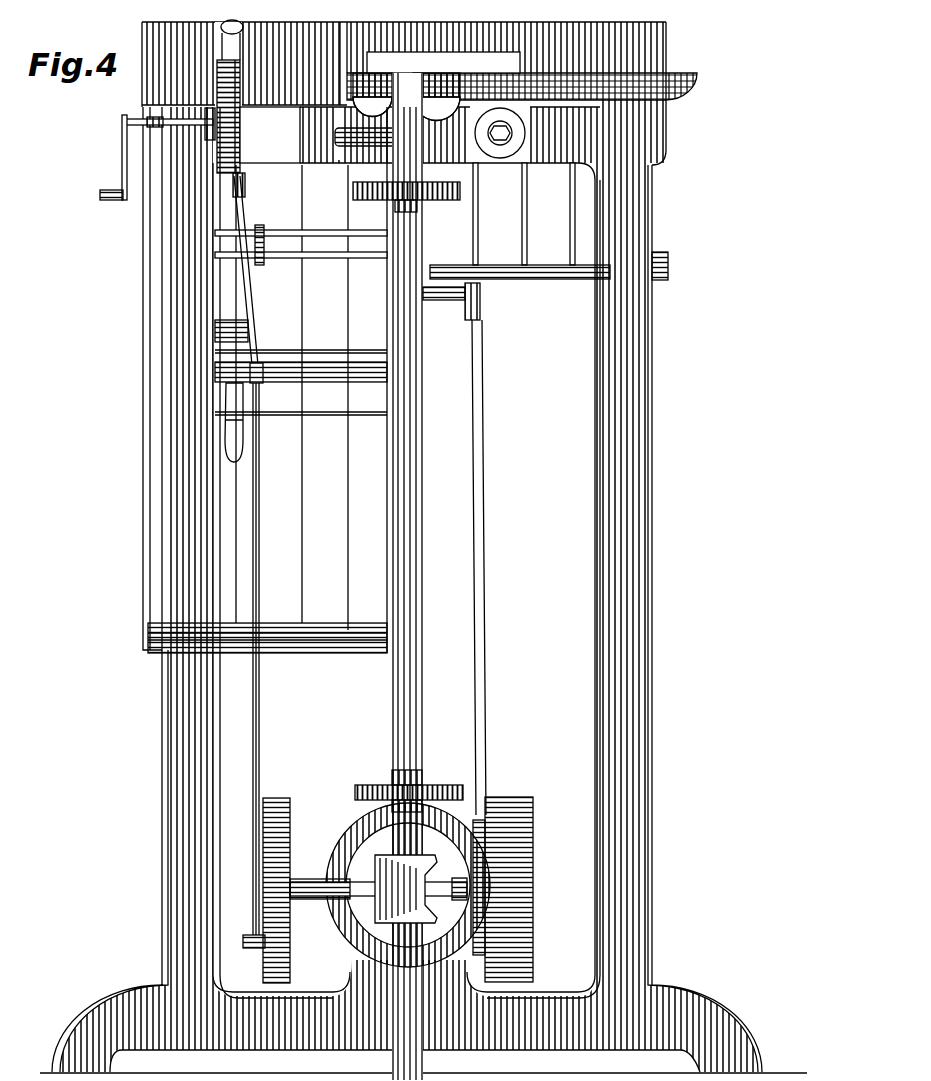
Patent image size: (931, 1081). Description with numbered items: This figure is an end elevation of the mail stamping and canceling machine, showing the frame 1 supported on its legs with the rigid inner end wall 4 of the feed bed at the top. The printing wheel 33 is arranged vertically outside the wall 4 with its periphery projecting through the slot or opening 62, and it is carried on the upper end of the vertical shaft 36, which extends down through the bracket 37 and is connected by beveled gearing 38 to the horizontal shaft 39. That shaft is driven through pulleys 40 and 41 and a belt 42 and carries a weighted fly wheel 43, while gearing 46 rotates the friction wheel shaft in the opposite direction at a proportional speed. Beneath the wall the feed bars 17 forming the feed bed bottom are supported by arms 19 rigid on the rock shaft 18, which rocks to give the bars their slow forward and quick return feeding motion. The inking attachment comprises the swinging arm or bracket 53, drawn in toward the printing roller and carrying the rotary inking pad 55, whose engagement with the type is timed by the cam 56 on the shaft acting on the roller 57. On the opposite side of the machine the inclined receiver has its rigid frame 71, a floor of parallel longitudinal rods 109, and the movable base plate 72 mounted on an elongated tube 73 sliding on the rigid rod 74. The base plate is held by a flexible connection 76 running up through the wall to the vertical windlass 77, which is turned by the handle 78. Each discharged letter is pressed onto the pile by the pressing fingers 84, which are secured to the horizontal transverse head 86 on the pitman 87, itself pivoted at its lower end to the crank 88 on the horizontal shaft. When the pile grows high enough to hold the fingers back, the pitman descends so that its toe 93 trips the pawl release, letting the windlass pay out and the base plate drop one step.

The frame 1 is at (178, 541).
The rigid inner end wall 4 is at (586, 42).
The feed bars 17 is at (516, 137).
The rock shaft 18 is at (554, 280).
The arms 19 is at (478, 246).
The printing wheel 33 is at (430, 80).
The vertical shaft 36 is at (408, 607).
The bracket 37 is at (358, 829).
The beveled gearing 38 is at (386, 858).
The horizontal shaft 39 is at (445, 898).
The pulley 40 is at (480, 302).
The pulley 41 is at (486, 840).
The belt 42 is at (485, 548).
The weighted fly wheel 43 is at (534, 870).
The gearing 46 is at (448, 785).
The swinging arm or bracket 53 is at (340, 143).
The rotary inking pad 55 is at (405, 80).
The cam 56 is at (462, 190).
The roller 57 is at (395, 205).
The slot or opening 62 is at (490, 66).
The receiver frame 71 is at (242, 131).
The movable base plate 72 is at (301, 382).
The elongated tube 73 is at (245, 435).
The rigid rod 74 is at (260, 512).
The flexible connection 76 is at (216, 162).
The vertical windlass 77 is at (216, 142).
The handle 78 is at (154, 154).
The pressing fingers 84 is at (300, 197).
The horizontal transverse head 86 is at (322, 258).
The pitman 87 is at (260, 568).
The crank 88 is at (252, 949).
The toe 93 is at (262, 365).
The longitudinal rods 109 is at (432, 115).